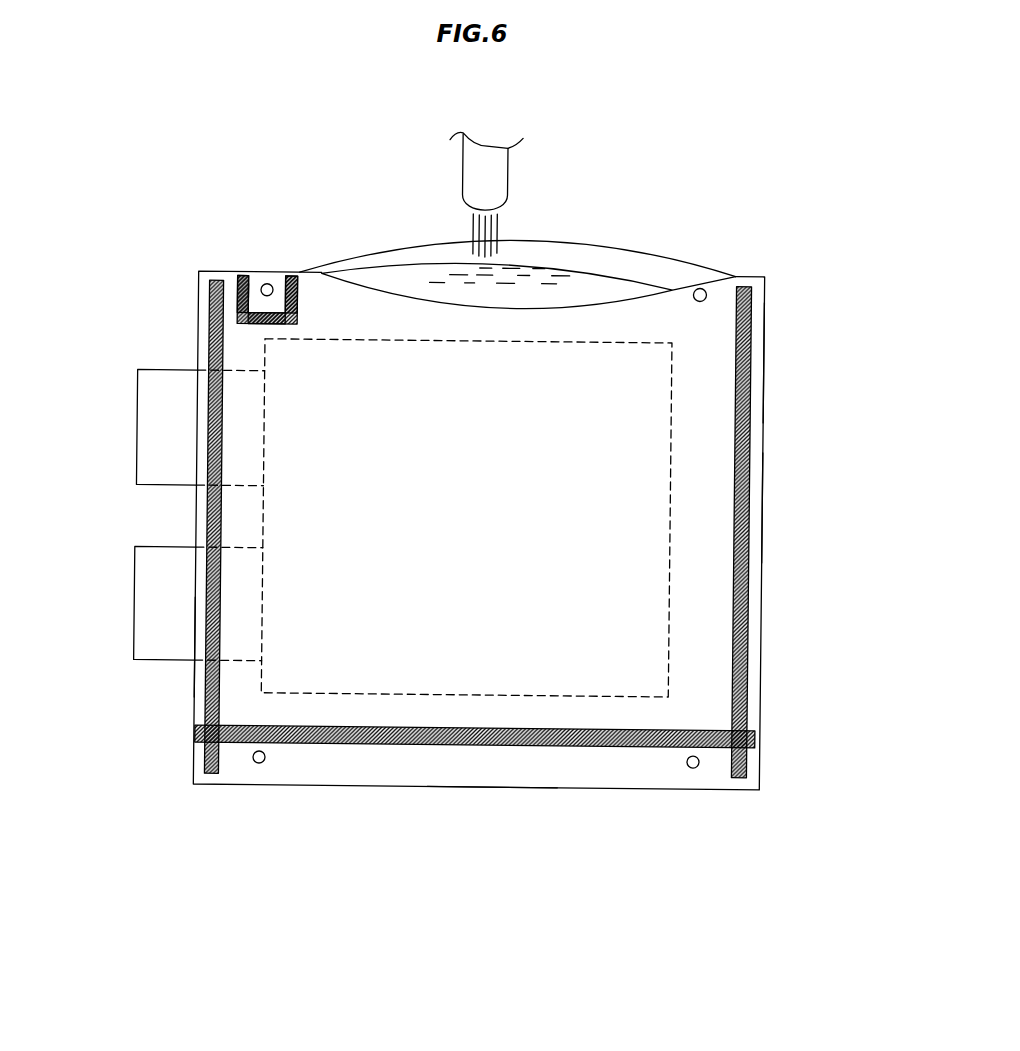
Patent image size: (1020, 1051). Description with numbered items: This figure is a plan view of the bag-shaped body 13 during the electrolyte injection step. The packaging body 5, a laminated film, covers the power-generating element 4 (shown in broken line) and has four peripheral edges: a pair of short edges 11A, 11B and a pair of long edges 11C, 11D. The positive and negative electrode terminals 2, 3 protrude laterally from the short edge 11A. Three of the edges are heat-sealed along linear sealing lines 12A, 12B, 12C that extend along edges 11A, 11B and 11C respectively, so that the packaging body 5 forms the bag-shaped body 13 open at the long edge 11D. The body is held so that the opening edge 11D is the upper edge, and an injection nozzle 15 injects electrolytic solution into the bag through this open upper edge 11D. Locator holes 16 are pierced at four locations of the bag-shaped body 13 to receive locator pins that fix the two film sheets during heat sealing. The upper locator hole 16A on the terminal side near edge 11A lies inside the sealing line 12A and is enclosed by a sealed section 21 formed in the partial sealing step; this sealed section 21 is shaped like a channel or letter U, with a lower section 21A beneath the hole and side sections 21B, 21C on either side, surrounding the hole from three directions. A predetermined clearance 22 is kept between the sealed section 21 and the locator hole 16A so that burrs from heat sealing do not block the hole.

The positive electrode terminal 2 is at (148, 405).
The negative electrode terminal 3 is at (143, 582).
The power-generating element 4 is at (748, 624).
The packaging body 5 is at (617, 716).
The short edge 11A is at (197, 717).
The short edge 11B is at (761, 501).
The long edge 11C is at (493, 788).
The opening edge 11D is at (594, 244).
The sealing line 12A is at (209, 682).
The sealing line 12B is at (742, 426).
The sealing line 12C is at (364, 745).
The bag-shaped body 13 is at (766, 357).
The injection nozzle 15 is at (493, 173).
The locator hole 16 is at (696, 286).
The upper locator hole 16A is at (264, 286).
The sealed section 21 is at (276, 335).
The lower section 21A is at (251, 322).
The side section 21B is at (244, 295).
The side section 21C is at (295, 297).
The clearance 22 is at (256, 291).